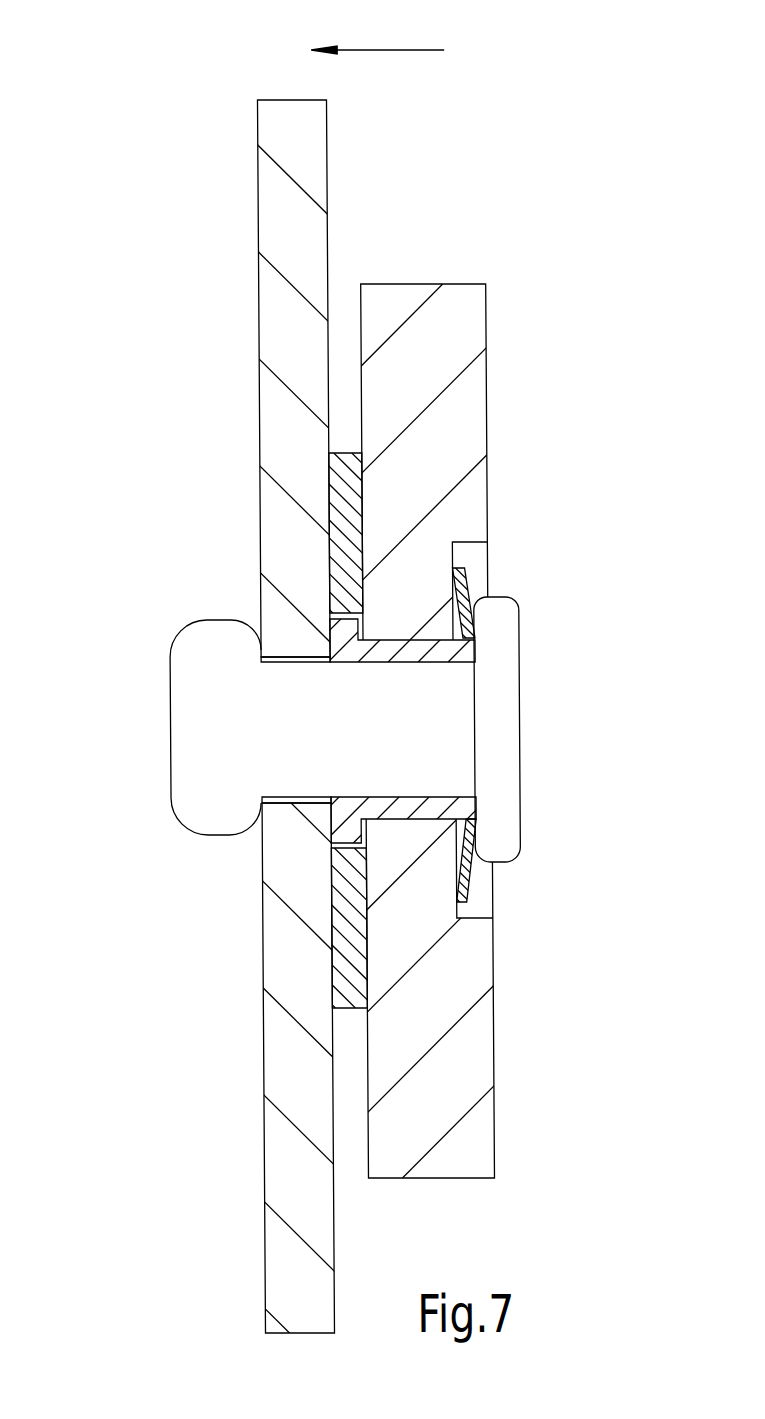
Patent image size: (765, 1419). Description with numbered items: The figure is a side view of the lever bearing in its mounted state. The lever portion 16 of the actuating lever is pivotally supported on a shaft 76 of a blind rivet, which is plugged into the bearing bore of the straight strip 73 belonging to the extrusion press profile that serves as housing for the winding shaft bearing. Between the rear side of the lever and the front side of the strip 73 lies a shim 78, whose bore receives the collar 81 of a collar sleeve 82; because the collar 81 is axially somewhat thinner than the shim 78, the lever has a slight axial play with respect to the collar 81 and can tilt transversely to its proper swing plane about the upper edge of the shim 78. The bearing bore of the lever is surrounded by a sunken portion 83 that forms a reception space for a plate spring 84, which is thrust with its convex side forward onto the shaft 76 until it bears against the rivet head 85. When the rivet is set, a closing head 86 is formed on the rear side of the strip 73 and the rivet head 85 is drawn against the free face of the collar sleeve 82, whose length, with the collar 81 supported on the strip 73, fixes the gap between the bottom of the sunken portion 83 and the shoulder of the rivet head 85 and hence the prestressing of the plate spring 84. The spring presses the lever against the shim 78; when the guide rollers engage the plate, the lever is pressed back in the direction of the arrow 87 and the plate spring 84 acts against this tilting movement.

The lever portion 16 is at (453, 453).
The straight strip 73 is at (305, 185).
The shaft 76 is at (345, 762).
The shim 78 is at (350, 972).
The collar 81 is at (347, 632).
The collar sleeve 82 is at (417, 808).
The sunken portion 83 is at (473, 912).
The plate spring 84 is at (467, 578).
The rivet head 85 is at (488, 712).
The closing head 86 is at (193, 817).
The arrow 87 is at (383, 50).